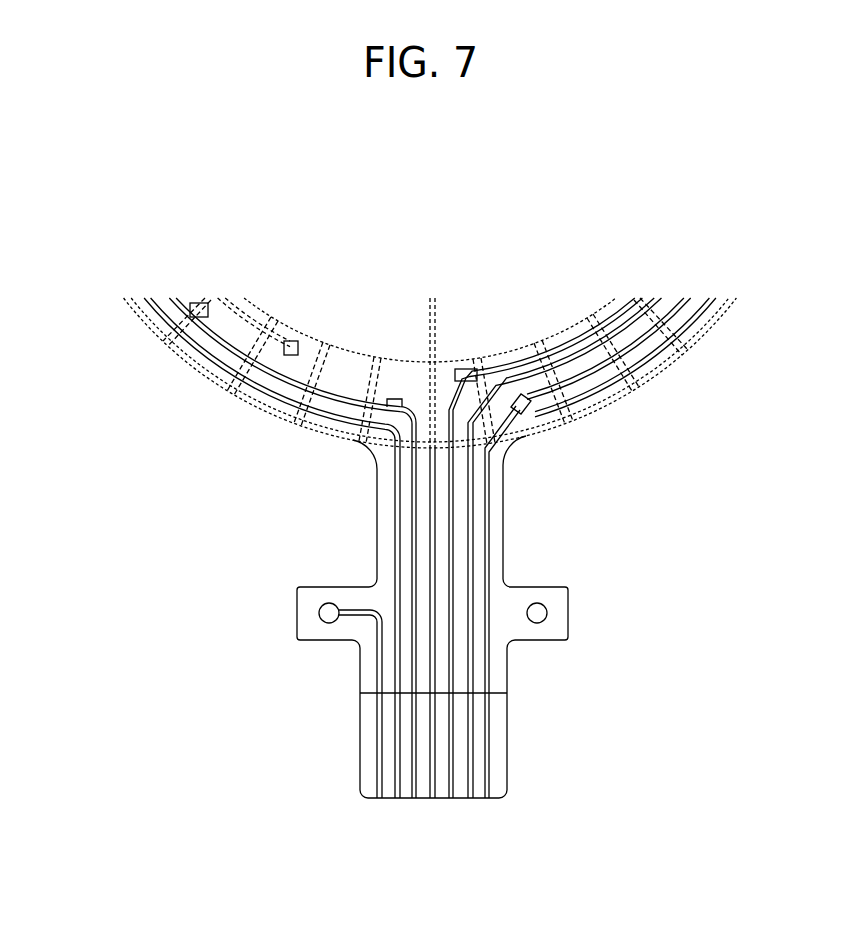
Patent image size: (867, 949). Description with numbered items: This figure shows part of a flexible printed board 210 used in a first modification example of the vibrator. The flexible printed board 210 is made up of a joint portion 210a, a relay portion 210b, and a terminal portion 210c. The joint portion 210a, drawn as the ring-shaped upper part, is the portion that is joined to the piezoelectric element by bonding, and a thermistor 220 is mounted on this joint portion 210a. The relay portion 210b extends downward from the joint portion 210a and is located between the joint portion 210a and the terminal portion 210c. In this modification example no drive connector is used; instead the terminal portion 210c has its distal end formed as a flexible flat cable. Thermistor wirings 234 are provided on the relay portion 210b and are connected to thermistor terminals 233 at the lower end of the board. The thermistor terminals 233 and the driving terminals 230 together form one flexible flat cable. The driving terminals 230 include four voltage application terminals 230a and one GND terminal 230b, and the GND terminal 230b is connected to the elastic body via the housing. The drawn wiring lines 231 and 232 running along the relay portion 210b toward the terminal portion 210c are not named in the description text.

The flexible printed board 210 is at (700, 271).
The joint portion 210a is at (172, 350).
The relay portion 210b is at (372, 490).
The terminal portion 210c is at (360, 745).
The thermistor 220 is at (527, 407).
The first wiring lines 231 is at (452, 600).
The ground wiring line 232 is at (323, 432).
The thermistor terminals 233 is at (487, 787).
The thermistor wirings 234 is at (470, 577).
The driving terminals 230 is at (483, 900).
The voltage application terminals 230a is at (450, 798).
The GND terminal 230b is at (357, 800).